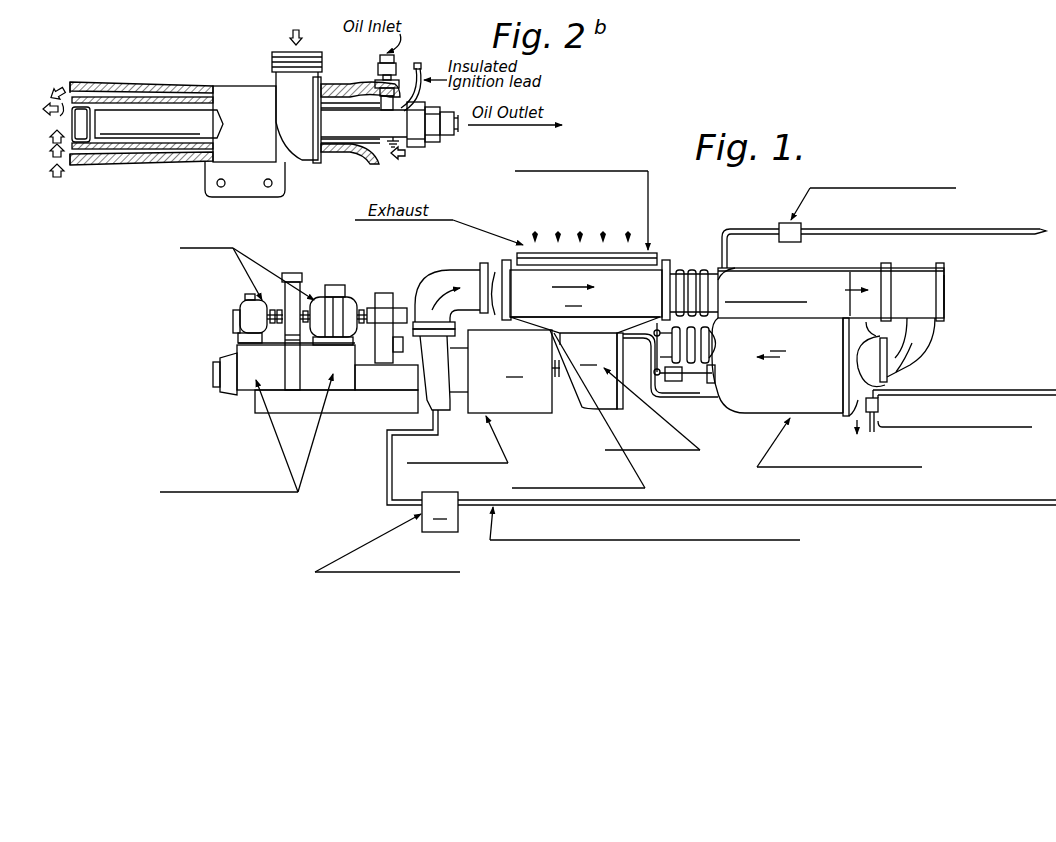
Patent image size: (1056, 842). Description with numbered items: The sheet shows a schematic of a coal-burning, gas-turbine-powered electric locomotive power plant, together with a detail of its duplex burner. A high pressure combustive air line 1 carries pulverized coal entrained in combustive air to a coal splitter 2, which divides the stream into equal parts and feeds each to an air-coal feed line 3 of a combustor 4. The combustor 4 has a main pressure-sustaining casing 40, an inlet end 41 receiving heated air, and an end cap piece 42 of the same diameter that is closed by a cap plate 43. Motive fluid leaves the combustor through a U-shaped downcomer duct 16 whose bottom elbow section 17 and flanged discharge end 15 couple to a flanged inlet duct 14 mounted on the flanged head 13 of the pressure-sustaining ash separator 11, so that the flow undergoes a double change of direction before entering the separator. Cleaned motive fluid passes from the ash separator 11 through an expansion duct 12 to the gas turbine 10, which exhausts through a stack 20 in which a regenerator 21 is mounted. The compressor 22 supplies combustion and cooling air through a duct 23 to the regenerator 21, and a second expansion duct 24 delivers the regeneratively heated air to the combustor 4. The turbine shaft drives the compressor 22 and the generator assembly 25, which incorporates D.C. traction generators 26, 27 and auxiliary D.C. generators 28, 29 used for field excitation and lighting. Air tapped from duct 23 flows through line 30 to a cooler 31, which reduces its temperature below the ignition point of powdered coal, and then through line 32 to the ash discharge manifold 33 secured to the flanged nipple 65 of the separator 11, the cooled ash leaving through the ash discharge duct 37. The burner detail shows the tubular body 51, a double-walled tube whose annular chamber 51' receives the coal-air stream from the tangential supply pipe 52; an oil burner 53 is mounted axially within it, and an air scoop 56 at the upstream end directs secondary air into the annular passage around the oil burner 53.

In FIG. 1, the high pressure combustive air line 1 is at (1006, 233).
In FIG. 1, the coal splitter 2 is at (801, 232).
In FIG. 1, the air-coal feed line 3 is at (752, 233).
In FIG. 1, the combustor 4 is at (792, 268).
In FIG. 1, the casing 40 is at (850, 272).
In FIG. 1, the inlet end 41 is at (735, 272).
In FIG. 1, the end cap piece 42 is at (905, 272).
In FIG. 1, the cap plate 43 is at (945, 289).
In FIG. 1, the gas turbine 10 is at (605, 383).
In FIG. 1, the ash separator 11 is at (817, 392).
In FIG. 1, the expansion duct 12 is at (696, 353).
In FIG. 1, the flanged head 13 is at (840, 386).
In FIG. 1, the flanged inlet duct 14 is at (874, 363).
In FIG. 1, the flanged discharge end 15 is at (876, 351).
In FIG. 1, the downcomer duct 16 is at (935, 334).
In FIG. 1, the bottom elbow section 17 is at (905, 369).
In FIG. 1, the stack 20 is at (577, 235).
In FIG. 1, the regenerator 21 is at (648, 257).
In FIG. 1, the compressor 22 is at (526, 409).
In FIG. 1, the duct 23 is at (450, 270).
In FIG. 1, the second expansion duct 24 is at (712, 274).
In FIG. 1, the generator assembly 25 is at (351, 416).
In FIG. 1, the D.C. traction generator 26 is at (234, 379).
In FIG. 1, the D.C. traction generator 27 is at (360, 378).
In FIG. 1, the auxiliary D.C. generator 28 is at (238, 323).
In FIG. 1, the auxiliary D.C. generator 29 is at (340, 300).
In FIG. 1, the line 30 is at (387, 465).
In FIG. 1, the cooler 31 is at (387, 532).
In FIG. 1, the line 32 is at (800, 502).
In FIG. 1, the ash discharge manifold 33 is at (879, 405).
In FIG. 1, the ash discharge duct 37 is at (875, 432).
In FIG. 1, the flanged nipple 65 is at (840, 410).
In FIG. 2b, the tubular body 51 is at (174, 106).
In FIG. 2b, the annular chamber 51' is at (141, 107).
In FIG. 2b, the tangential supply pipe 52 is at (320, 84).
In FIG. 2b, the oil burner 53 is at (152, 137).
In FIG. 2b, the air scoop 56 is at (372, 158).